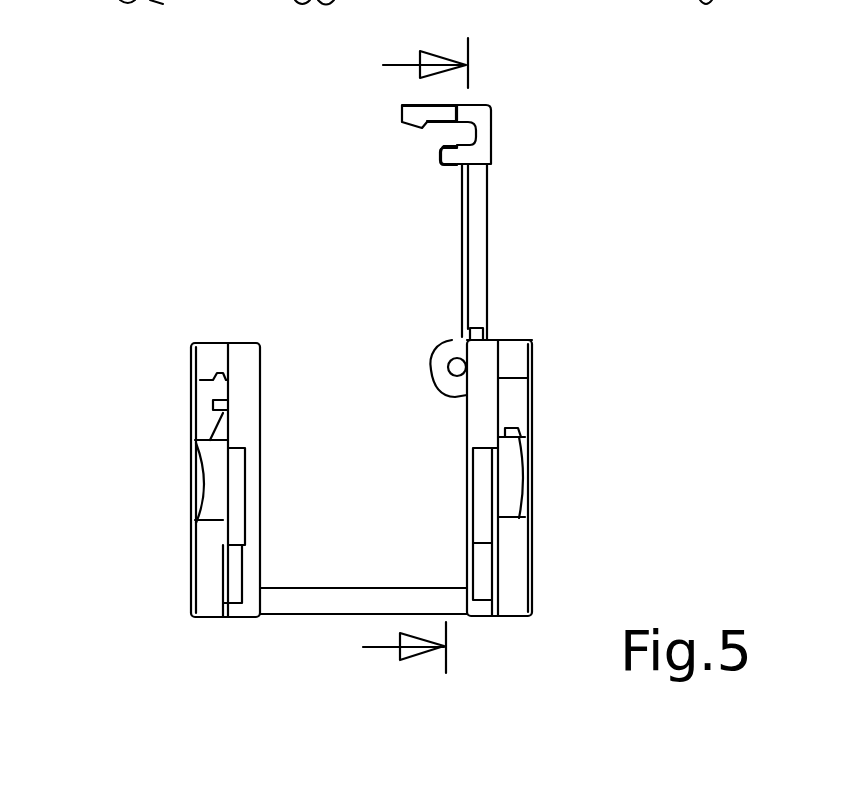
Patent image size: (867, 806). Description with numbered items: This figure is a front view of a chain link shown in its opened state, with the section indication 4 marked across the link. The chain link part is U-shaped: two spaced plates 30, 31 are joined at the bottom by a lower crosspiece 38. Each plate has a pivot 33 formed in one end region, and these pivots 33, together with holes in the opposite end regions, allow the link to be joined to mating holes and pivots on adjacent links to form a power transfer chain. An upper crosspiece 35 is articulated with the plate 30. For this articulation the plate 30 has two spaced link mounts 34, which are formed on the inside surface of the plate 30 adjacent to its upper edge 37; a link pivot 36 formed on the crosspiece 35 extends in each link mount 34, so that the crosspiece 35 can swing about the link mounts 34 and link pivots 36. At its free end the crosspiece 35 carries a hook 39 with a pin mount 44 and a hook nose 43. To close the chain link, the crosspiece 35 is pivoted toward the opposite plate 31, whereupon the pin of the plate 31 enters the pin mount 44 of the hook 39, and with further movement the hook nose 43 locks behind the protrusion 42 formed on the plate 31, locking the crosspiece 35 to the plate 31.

The section line for FIG. 4 is at (407, 357).
The plate 30 is at (533, 377).
The plate 31 is at (192, 363).
The pivot 33 is at (210, 485).
The link mount 34 is at (455, 392).
The upper crosspiece 35 is at (487, 214).
The link pivot 36 is at (447, 360).
The upper edge 37 is at (517, 336).
The lower crosspiece 38 is at (325, 602).
The hook 39 is at (495, 108).
The protrusion 42 is at (213, 405).
The hook nose 43 is at (420, 127).
The pin mount 44 is at (462, 131).